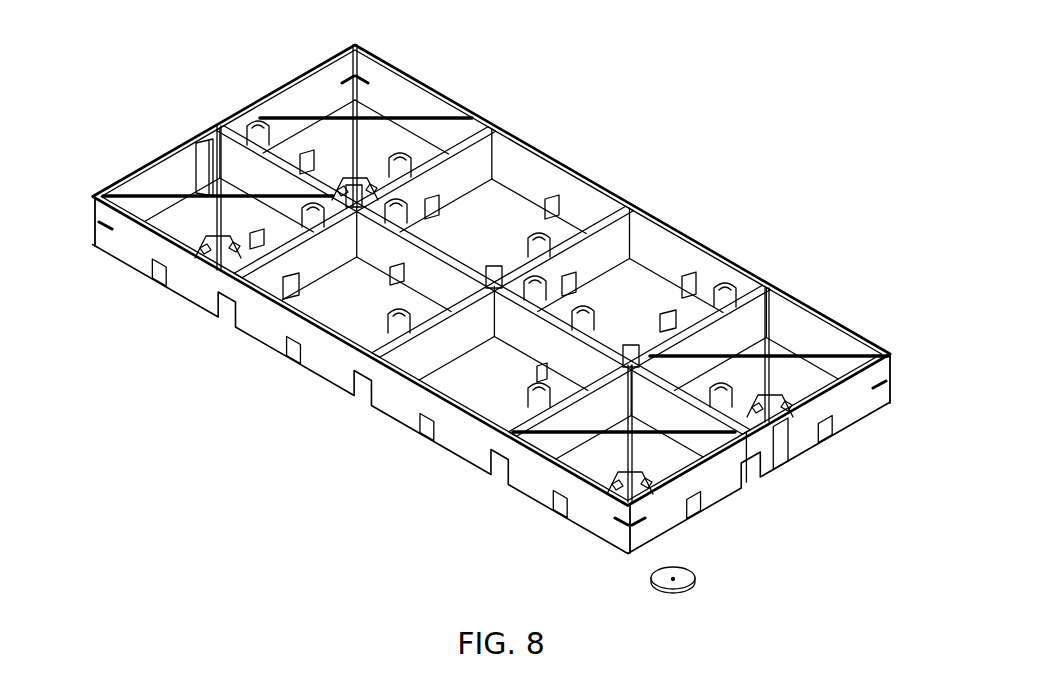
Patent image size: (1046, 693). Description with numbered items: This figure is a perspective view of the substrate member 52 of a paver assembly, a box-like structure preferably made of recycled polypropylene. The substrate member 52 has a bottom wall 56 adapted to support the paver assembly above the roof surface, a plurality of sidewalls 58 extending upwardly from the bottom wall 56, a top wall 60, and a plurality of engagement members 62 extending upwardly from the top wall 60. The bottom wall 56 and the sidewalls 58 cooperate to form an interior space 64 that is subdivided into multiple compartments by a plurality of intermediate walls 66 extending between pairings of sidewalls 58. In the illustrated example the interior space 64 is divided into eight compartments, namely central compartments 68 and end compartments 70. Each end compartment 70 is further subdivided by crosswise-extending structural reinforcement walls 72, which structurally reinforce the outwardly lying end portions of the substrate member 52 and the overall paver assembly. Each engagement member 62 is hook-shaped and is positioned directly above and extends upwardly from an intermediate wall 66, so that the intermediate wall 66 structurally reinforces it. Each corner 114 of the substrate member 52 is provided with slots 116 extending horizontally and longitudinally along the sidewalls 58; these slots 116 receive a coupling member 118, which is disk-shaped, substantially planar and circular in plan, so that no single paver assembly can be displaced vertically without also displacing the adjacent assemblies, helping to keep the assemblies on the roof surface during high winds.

The substrate member 52 is at (718, 110).
The bottom wall 56 is at (645, 292).
The sidewalls 58 is at (706, 245).
The top wall 60 is at (613, 202).
The engagement members 62 is at (724, 279).
The interior space 64 is at (503, 200).
The intermediate walls 66 is at (774, 346).
The central compartments 68 is at (526, 220).
The end compartments 70 is at (768, 305).
The structural reinforcement walls 72 is at (834, 352).
The corner 114 is at (95, 247).
The slots 116 is at (98, 222).
The coupling member 118 is at (643, 527).